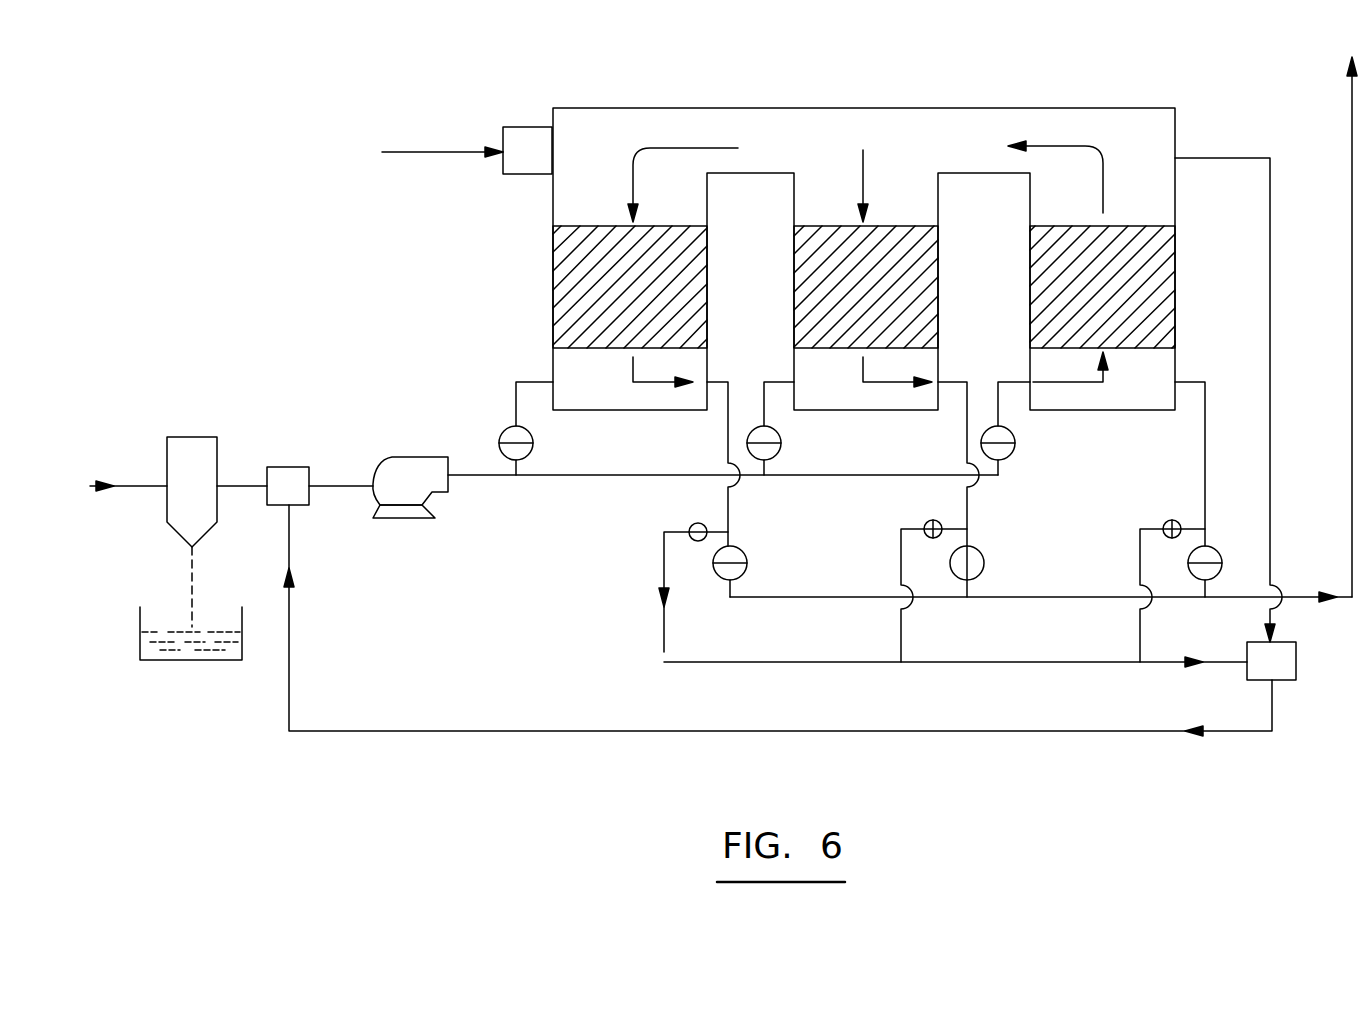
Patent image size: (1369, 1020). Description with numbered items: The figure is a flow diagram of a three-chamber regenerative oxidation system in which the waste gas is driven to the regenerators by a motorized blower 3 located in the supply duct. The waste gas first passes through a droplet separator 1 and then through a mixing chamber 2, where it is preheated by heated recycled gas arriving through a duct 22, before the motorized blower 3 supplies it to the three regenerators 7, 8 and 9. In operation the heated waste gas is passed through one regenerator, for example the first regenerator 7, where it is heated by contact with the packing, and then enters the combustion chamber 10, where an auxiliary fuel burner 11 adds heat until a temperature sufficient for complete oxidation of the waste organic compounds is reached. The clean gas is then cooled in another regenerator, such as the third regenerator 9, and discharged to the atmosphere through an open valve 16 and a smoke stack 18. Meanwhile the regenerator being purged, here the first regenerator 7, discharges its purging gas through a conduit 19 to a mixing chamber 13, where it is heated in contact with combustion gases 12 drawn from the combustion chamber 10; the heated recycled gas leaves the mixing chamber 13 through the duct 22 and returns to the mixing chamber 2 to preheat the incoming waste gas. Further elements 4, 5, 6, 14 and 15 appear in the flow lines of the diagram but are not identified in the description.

The droplet separator 1 is at (180, 437).
The mixing chamber 2 is at (293, 467).
The motorized blower 3 is at (418, 457).
The valve 4 is at (533, 446).
The valve 5 is at (781, 446).
The valve 6 is at (1015, 443).
The first regenerator 7 is at (553, 297).
The second regenerator 8 is at (802, 296).
The third regenerator 9 is at (1030, 297).
The combustion chamber 10 is at (860, 108).
The auxiliary fuel burner 11 is at (518, 128).
The combustion gases 12 is at (1224, 158).
The mixing chamber 13 is at (1296, 660).
The valve 14 is at (747, 566).
The valve 15 is at (984, 566).
The open valve 16 is at (1242, 572).
The smoke stack 18 is at (1352, 106).
The conduit 19 is at (1034, 662).
The duct 22 is at (289, 672).